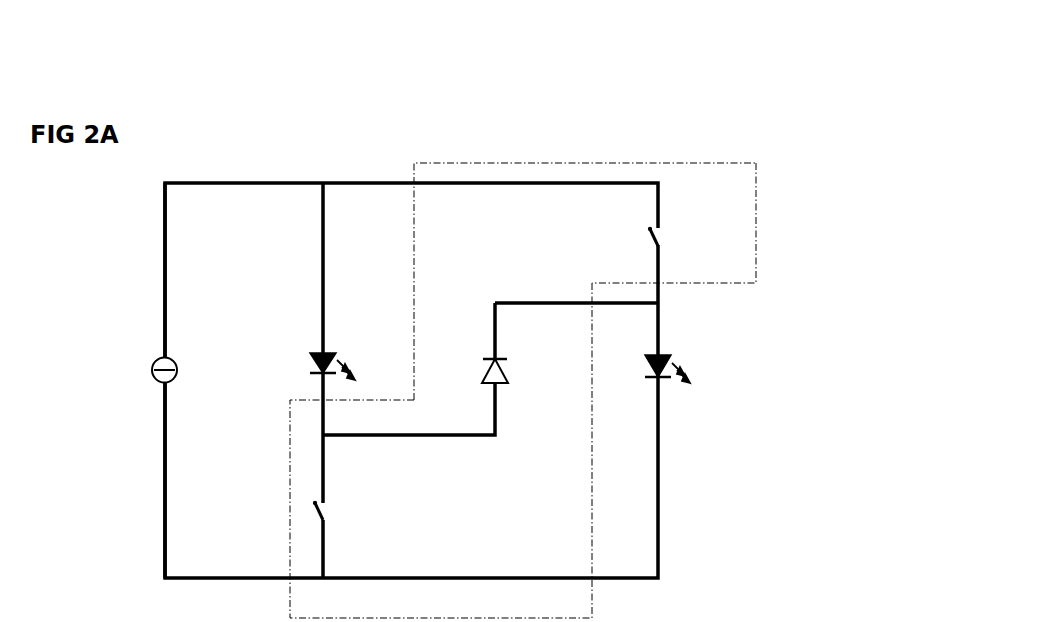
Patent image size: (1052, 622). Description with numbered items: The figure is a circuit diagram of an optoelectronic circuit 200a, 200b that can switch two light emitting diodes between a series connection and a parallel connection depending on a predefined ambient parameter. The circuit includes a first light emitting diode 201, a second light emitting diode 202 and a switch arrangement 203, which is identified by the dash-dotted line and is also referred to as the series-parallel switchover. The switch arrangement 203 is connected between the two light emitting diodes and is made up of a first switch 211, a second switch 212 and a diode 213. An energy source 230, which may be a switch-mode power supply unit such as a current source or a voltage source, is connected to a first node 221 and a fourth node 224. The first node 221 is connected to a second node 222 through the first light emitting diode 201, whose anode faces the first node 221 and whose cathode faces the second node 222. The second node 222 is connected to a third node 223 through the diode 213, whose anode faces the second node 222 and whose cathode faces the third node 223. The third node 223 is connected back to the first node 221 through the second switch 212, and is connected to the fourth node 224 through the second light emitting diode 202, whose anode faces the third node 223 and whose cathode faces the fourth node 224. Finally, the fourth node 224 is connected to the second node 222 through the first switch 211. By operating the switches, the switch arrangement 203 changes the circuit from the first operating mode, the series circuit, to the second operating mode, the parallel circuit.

The optoelectronic circuit 200a is at (568, 137).
The optoelectronic circuit 200b is at (678, 621).
The switch arrangement 203 is at (414, 163).
The energy source 230 is at (176, 362).
The first node 221 is at (327, 188).
The second node 222 is at (327, 438).
The third node 223 is at (655, 303).
The fourth node 224 is at (328, 577).
The first light emitting diode 201 is at (333, 357).
The second light emitting diode 202 is at (670, 360).
The first switch 211 is at (316, 508).
The second switch 212 is at (660, 242).
The diode 213 is at (508, 374).